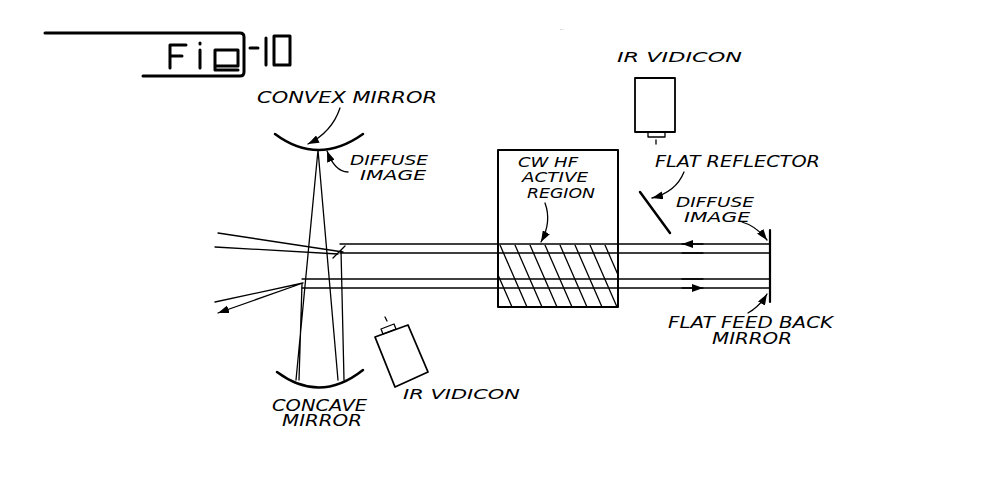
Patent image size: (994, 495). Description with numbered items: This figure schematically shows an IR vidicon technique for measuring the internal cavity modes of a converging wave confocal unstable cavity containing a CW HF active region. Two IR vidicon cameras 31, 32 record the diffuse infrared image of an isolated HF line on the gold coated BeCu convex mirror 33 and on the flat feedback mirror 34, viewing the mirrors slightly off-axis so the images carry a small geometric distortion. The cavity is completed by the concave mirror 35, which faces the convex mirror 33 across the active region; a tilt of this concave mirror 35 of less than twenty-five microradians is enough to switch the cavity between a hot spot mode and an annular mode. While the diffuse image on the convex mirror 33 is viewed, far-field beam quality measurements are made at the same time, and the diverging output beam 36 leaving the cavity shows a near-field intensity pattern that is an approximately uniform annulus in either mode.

The IR vidicon camera 31 is at (423, 343).
The IR vidicon camera 32 is at (677, 100).
The convex mirror 33 is at (291, 147).
The flat feedback mirror 34 is at (772, 248).
The concave mirror 35 is at (281, 375).
The output beam 36 is at (198, 296).